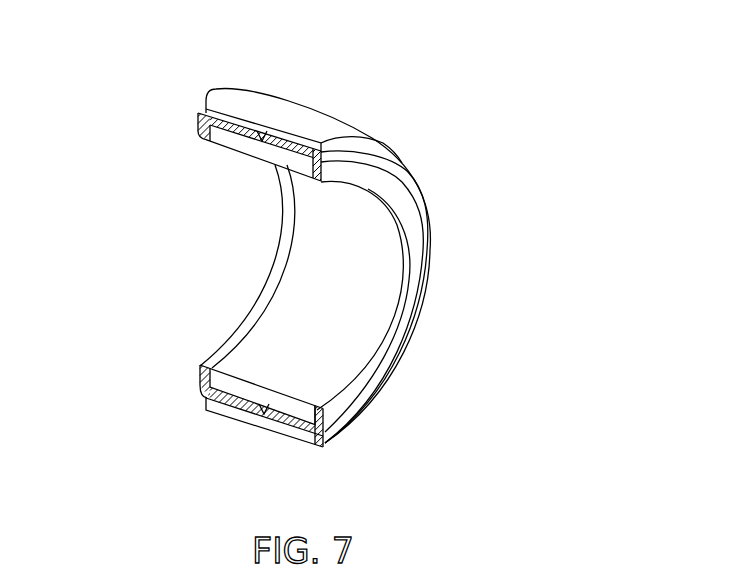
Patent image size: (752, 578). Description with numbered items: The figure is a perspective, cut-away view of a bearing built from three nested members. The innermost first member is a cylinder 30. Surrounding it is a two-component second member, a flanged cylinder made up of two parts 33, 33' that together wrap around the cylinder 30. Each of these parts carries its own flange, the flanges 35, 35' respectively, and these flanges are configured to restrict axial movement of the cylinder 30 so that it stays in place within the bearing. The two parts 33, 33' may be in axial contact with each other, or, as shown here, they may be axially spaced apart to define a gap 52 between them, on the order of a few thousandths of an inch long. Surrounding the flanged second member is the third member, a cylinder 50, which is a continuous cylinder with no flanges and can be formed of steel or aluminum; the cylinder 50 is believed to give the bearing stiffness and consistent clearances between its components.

The cylinder 50 is at (236, 96).
The gap 52 is at (268, 132).
The cylinder 30 is at (233, 380).
The flange 35 is at (220, 387).
The part 33 is at (229, 420).
The part 33' is at (255, 439).
The flange 35' is at (388, 325).